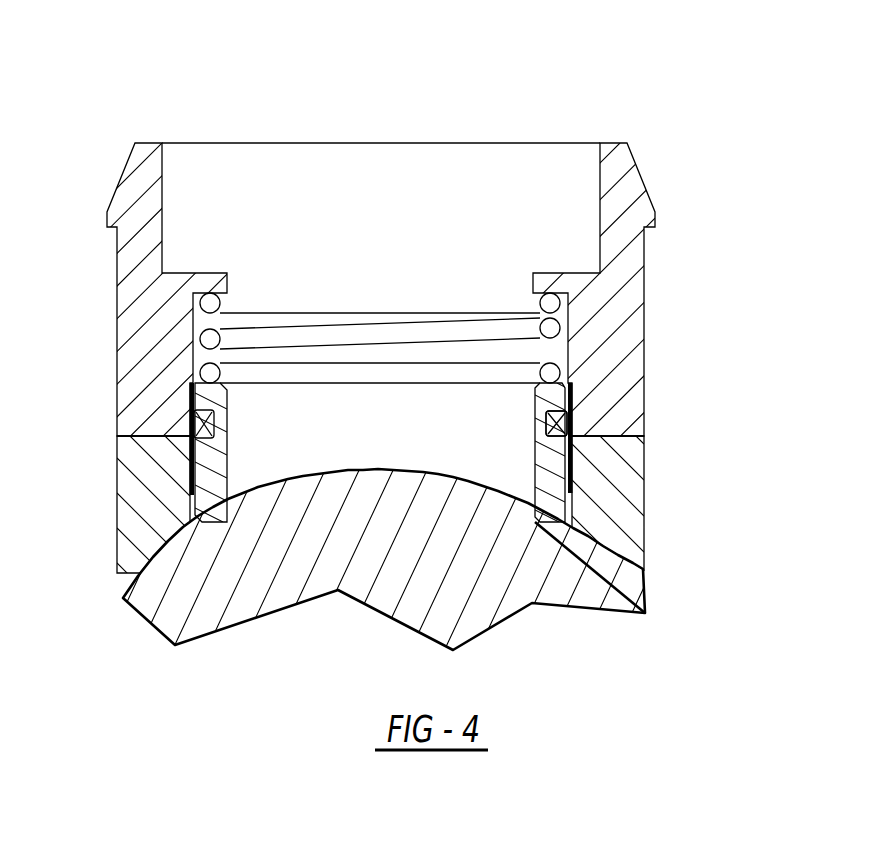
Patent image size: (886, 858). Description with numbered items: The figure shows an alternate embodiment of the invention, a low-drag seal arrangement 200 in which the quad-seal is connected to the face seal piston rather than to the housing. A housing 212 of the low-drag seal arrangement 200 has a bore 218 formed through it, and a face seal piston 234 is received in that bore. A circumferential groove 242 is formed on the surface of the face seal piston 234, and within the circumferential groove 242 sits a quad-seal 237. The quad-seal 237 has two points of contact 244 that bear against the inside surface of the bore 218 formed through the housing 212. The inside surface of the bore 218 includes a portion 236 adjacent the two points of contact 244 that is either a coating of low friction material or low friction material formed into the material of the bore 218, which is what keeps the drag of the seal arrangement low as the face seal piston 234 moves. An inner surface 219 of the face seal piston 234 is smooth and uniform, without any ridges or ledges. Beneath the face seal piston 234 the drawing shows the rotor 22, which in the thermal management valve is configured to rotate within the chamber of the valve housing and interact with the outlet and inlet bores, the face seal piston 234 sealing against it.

The low-drag seal arrangement 200 is at (721, 109).
The housing 212 is at (620, 168).
The bore 218 is at (203, 318).
The inner surface 219 is at (228, 468).
The circumferential groove 242 is at (548, 427).
The face seal piston 234 is at (547, 402).
The points of contact 244 is at (573, 420).
The quad-seal 237 is at (575, 424).
The portion 236 is at (570, 457).
The rotor 22 is at (590, 580).